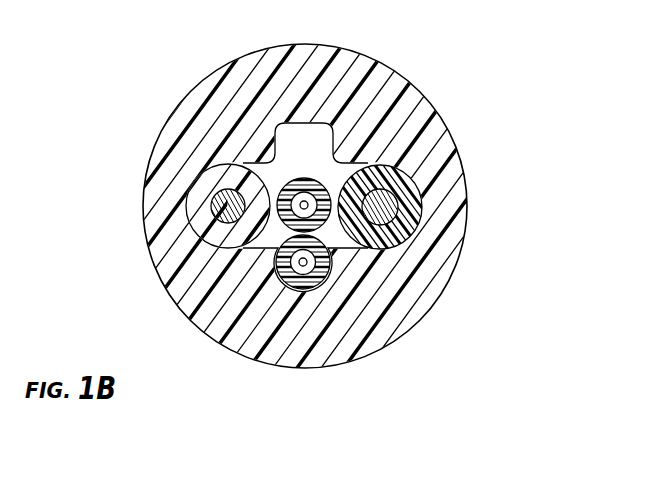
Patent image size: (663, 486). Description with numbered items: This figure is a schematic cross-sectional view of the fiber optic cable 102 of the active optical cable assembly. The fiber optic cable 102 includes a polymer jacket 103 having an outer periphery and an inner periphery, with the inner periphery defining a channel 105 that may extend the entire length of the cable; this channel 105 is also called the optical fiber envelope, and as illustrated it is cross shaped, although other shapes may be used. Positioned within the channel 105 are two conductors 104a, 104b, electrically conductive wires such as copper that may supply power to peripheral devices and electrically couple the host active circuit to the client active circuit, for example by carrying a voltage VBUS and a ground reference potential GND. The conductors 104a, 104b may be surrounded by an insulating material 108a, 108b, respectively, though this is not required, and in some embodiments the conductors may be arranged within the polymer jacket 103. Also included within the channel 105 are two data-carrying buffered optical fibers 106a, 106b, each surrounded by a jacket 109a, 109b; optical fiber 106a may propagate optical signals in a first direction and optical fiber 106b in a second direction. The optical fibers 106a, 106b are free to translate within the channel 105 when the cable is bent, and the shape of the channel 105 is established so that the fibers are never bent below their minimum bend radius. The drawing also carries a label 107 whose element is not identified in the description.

The fiber optic cable 102 is at (445, 78).
The polymer jacket 103 is at (443, 170).
The channel 105 is at (313, 147).
The central lumen 107 is at (257, 160).
The conductor 104a is at (217, 223).
The conductor 104b is at (388, 228).
The insulating material 108a is at (212, 206).
The insulating material 108b is at (410, 212).
The jacket 109a is at (283, 222).
The jacket 109b is at (313, 278).
The optical fiber 106a is at (308, 203).
The optical fiber 106b is at (299, 263).